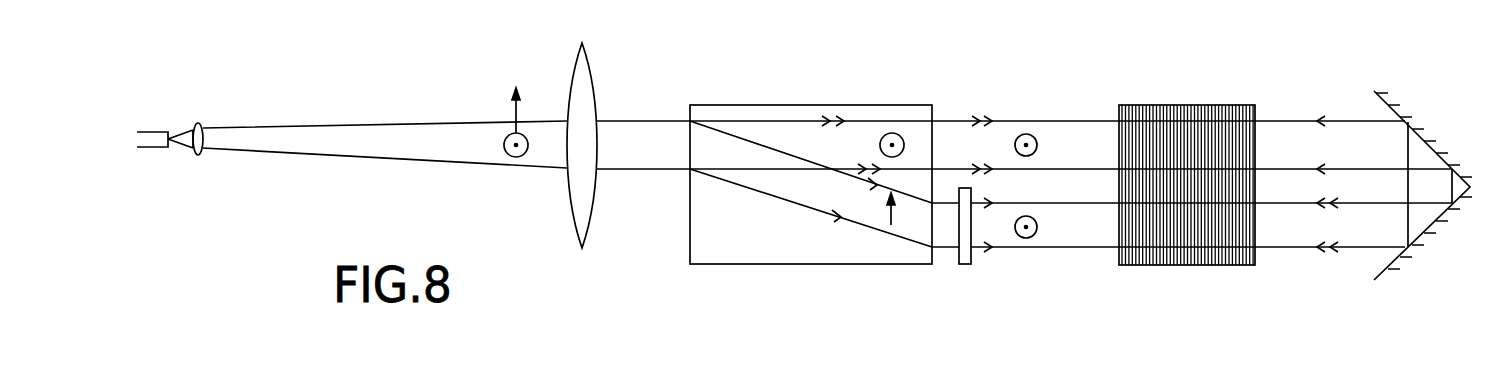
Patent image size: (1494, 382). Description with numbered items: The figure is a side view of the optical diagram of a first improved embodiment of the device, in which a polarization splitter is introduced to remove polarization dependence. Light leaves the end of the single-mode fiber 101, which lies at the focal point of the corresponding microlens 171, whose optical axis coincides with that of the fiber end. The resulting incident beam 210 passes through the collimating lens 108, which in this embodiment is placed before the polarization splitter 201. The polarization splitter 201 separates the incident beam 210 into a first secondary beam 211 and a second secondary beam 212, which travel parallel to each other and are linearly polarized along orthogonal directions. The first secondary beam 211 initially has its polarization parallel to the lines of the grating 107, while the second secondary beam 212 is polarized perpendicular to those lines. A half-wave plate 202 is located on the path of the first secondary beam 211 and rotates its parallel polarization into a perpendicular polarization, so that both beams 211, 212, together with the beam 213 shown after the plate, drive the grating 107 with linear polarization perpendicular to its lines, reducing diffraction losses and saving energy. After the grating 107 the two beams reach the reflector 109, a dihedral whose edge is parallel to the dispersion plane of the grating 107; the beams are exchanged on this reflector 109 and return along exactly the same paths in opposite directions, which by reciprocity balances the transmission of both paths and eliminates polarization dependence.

The single-mode fiber 101 is at (153, 132).
The microlens 171 is at (201, 155).
The incident beam 210 is at (357, 146).
The collimating lens 108 is at (580, 212).
The polarization splitter 201 is at (745, 248).
The first secondary beam 211 is at (944, 225).
The second secondary beam 212 is at (948, 140).
The half-wave plate 202 is at (963, 268).
The light beam 213 is at (1075, 225).
The grating 107 is at (1205, 265).
The reflector 109 is at (1423, 240).